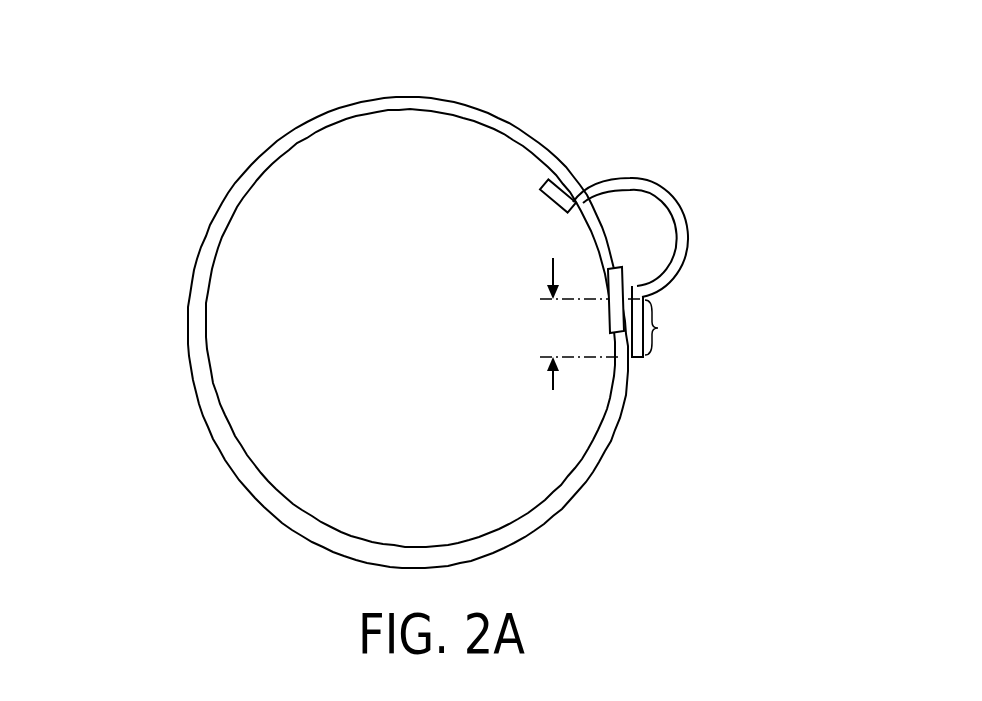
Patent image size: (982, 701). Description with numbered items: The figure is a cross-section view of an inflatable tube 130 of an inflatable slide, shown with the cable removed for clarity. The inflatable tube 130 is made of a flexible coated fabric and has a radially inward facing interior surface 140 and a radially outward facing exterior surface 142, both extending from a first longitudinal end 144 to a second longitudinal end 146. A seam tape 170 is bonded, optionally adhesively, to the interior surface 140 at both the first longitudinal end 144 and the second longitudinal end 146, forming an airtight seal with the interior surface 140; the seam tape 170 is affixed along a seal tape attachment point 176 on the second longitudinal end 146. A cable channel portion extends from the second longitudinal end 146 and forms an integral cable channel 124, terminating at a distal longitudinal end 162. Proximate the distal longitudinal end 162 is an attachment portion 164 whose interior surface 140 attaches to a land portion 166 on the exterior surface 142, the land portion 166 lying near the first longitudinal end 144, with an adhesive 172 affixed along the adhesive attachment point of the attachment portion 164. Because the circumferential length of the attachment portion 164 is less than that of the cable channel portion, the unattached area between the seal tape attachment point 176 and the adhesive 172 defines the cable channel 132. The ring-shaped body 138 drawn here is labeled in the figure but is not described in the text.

The inflatable tube 130 is at (125, 130).
The integral cable channel 124 is at (700, 218).
The cable channel 132 is at (658, 264).
The band 138 is at (203, 257).
The interior surface 140 is at (277, 160).
The exterior surface 142 is at (445, 100).
The first longitudinal end 144 is at (614, 268).
The second longitudinal end 146 is at (560, 195).
The distal longitudinal end 162 is at (634, 358).
The attachment portion 164 is at (677, 327).
The land portion 166 is at (589, 339).
The seam tape 170 is at (587, 238).
The adhesive 172 is at (608, 320).
The seal tape attachment point 176 is at (575, 201).